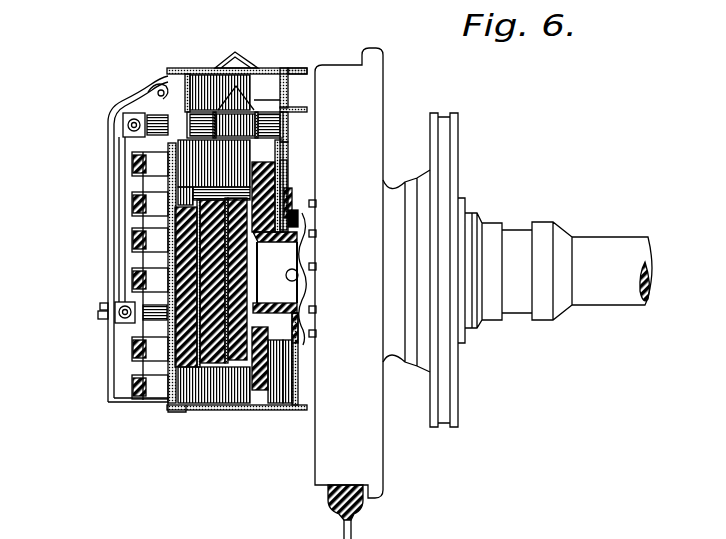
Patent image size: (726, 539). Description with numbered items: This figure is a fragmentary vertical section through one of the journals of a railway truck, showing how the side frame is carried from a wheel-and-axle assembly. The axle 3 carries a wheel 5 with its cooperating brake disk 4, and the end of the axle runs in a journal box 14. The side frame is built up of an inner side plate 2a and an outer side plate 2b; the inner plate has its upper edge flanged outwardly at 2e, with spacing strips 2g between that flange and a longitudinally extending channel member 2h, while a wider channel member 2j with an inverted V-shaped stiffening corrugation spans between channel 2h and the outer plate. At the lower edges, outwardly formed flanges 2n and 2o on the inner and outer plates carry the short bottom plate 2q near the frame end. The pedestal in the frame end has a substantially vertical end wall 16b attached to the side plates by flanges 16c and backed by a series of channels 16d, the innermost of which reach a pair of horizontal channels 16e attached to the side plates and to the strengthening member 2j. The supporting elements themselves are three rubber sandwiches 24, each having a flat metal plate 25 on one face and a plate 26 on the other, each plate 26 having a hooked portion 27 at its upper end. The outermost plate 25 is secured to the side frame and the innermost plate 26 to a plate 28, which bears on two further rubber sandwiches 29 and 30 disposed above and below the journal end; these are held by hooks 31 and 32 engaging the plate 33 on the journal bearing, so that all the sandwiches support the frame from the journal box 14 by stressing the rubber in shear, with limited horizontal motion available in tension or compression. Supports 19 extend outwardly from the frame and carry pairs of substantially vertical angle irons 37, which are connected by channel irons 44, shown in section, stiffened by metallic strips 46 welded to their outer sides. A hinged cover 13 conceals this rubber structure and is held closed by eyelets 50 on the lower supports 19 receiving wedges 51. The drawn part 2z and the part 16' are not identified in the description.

The inner side plate 2a is at (290, 136).
The outer side plate 2b is at (186, 70).
The outward flange of inner plate 2e is at (291, 117).
The spacing strips 2g is at (295, 109).
The channel member 2h is at (293, 88).
The channel member 2j is at (272, 106).
The outwardly formed flange 2n is at (299, 411).
The outwardly formed flange 2o is at (167, 406).
The short bottom plate 2q is at (257, 411).
The shell apex 2z is at (222, 67).
The axle 3 is at (606, 243).
The brake disk 4 is at (458, 130).
The wheel 5 is at (363, 92).
The cover 13 is at (116, 112).
The journal box 14 is at (304, 262).
The insulating member 16' is at (321, 216).
The end wall 16b is at (242, 144).
The flanges 16c is at (286, 378).
The channels 16d is at (235, 113).
The horizontal channels 16e is at (200, 74).
The supports 19 is at (159, 90).
The rubber sandwiches 24 is at (230, 405).
The flat metal plate 25 is at (198, 405).
The plate 26 is at (248, 273).
The hooked portion 27 is at (195, 197).
The plate 28 is at (248, 259).
The rubber sandwich 29 is at (286, 186).
The rubber sandwich 30 is at (276, 364).
The hook 31 is at (238, 180).
The hook 32 is at (267, 313).
The plate 33 is at (292, 193).
The angle irons 37 is at (130, 147).
The channel irons 44 is at (132, 162).
The metallic strips 46 is at (130, 288).
The eyelets 50 is at (100, 314).
The wedges 51 is at (102, 306).